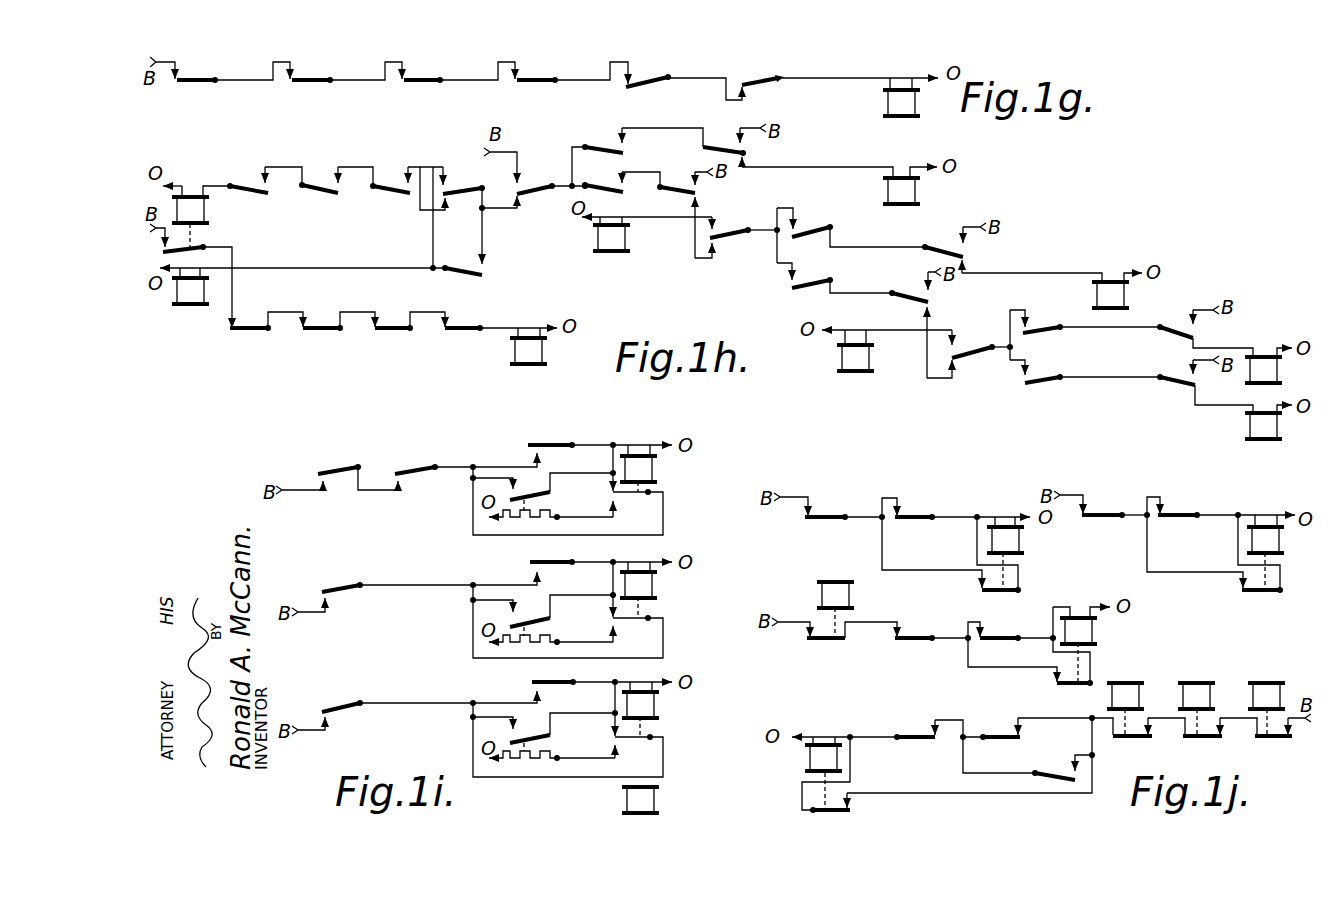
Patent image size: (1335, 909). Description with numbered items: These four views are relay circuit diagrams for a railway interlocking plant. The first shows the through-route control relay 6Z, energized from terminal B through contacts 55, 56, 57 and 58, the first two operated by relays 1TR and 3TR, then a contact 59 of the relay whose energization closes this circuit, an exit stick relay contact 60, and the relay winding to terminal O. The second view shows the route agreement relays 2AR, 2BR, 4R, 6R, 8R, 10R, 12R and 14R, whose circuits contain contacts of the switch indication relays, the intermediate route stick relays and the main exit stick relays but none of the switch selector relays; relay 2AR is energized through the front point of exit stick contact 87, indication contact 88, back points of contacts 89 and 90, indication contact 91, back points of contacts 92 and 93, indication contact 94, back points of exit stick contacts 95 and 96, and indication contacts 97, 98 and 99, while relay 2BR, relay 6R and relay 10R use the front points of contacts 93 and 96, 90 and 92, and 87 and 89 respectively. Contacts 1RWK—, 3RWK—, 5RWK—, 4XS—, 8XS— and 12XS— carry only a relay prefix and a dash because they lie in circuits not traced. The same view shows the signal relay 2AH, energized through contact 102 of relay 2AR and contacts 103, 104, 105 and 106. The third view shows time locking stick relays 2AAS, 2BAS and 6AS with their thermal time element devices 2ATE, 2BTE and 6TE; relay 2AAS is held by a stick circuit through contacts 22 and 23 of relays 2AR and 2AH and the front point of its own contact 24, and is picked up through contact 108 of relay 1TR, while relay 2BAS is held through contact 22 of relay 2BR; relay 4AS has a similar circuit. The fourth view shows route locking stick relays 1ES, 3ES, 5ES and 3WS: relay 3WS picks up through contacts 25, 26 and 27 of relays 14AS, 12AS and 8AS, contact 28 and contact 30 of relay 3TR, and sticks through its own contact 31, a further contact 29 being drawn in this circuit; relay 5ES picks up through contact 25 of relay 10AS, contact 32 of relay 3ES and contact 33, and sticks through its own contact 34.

In FIG. 1G, the relay 1TR contact 55 is at (207, 65).
In FIG. 1G, the relay 3TR contact 56 is at (320, 65).
In FIG. 1G, the relay 5TR contact 57 is at (428, 75).
In FIG. 1G, the relay 10TR contact 58 is at (545, 65).
In FIG. 1G, the relay 1NE contact 59 is at (652, 75).
In FIG. 1G, the relay 6XS contact 60 is at (764, 65).
In FIG. 1G, the through route control relay 6Z is at (884, 104).
In FIG. 1H, the relay 1NWK contact 99 is at (248, 172).
In FIG. 1H, the relay 3NWK contact 98 is at (318, 196).
In FIG. 1H, the relay 5NWK contact 97 is at (393, 172).
In FIG. 1H, the relay 6XS contact 96 is at (467, 190).
In FIG. 1H, the relay 2XS contact 95 is at (535, 200).
In FIG. 1H, the relay 1RWK is at (484, 271).
In FIG. 1H, the route agreement relay 2AR is at (204, 214).
In FIG. 1H, the route agreement relay 2BR is at (190, 304).
In FIG. 1H, the relay 2AR contact 102 is at (196, 252).
In FIG. 1H, the relay 1TR contact 103 is at (247, 338).
In FIG. 1H, the relay 3TR contact 104 is at (328, 320).
In FIG. 1H, the relay 5TR contact 105 is at (394, 338).
In FIG. 1H, the relay 10TR contact 106 is at (468, 320).
In FIG. 1H, the signal relay 2AH is at (528, 364).
In FIG. 1H, the contact of switch 4XS is at (725, 130).
In FIG. 1H, the route agreement relay 4R is at (916, 193).
In FIG. 1H, the relay 1NWK contact 94 is at (608, 172).
In FIG. 1H, the relay 6XS contact 93 is at (698, 187).
In FIG. 1H, the relay 6PBS contact 92 is at (732, 219).
In FIG. 1H, the route agreement relay 6R is at (612, 252).
In FIG. 1H, the back contact of relay 3RWK is at (808, 232).
In FIG. 1H, the contact of switch 8XS is at (942, 243).
In FIG. 1H, the route agreement relay 8R is at (1125, 298).
In FIG. 1H, the relay 3NWK contact 91 is at (809, 287).
In FIG. 1H, the relay 10XS contact 90 is at (905, 306).
In FIG. 1H, the relay 10PBS contact 89 is at (975, 370).
In FIG. 1H, the route agreement relay 10R is at (855, 372).
In FIG. 1H, the back contact of relay 5RWK is at (1039, 332).
In FIG. 1H, the contact of switch 12XS is at (1195, 335).
In FIG. 1H, the route agreement relay 12R is at (1252, 382).
In FIG. 1H, the relay 5NWK contact 88 is at (1042, 381).
In FIG. 1H, the relay 14XS contact 87 is at (1180, 388).
In FIG. 1H, the route agreement relay 14R is at (1250, 432).
In FIG. 1I, the route agreement relay contact 22 is at (335, 456).
In FIG. 1I, the relay 2AH contact 23 is at (415, 466).
In FIG. 1I, the relay 1TR contact 108 is at (555, 438).
In FIG. 1I, the time locking stick relay 2AAS is at (652, 470).
In FIG. 1I, the time element device 2ATE is at (543, 500).
In FIG. 1I, the time locking stick relay contact 24 is at (652, 490).
In FIG. 1I, the relay 1TR is at (528, 564).
In FIG. 1I, the time locking stick relay 2BAS is at (652, 587).
In FIG. 1I, the time element device 2BTE is at (543, 628).
In FIG. 1I, the relay 3TR is at (555, 671).
In FIG. 1I, the time locking stick relay 6AS is at (655, 706).
In FIG. 1I, the time element device 6TE is at (546, 745).
In FIG. 1I, the time locking stick relay 4AS is at (656, 800).
In FIG. 1J, the route locking relay contact 32 is at (830, 495).
In FIG. 1J, the relay 5TR contact 33 is at (916, 515).
In FIG. 1J, the route locking stick relay 1ES is at (1015, 542).
In FIG. 1J, the relay 5ES contact 34 is at (1010, 585).
In FIG. 1J, the time locking stick relay 10AS is at (832, 579).
In FIG. 1J, the route locking stick relay 3ES is at (1266, 525).
In FIG. 1J, the time locking stick relay contact 25 is at (826, 650).
In FIG. 1J, the route locking stick relay 5ES is at (1097, 633).
In FIG. 1J, the relay 3TR contact 30 is at (912, 720).
In FIG. 1J, the relay 5TR contact 28 is at (997, 720).
In FIG. 1J, the relay 8AS contact 27 is at (1137, 740).
In FIG. 1J, the relay 12AS contact 26 is at (1207, 740).
In FIG. 1J, the time locking stick relay 8AS is at (1120, 683).
In FIG. 1J, the time locking stick relay 12AS is at (1195, 675).
In FIG. 1J, the time locking stick relay 14AS is at (1265, 675).
In FIG. 1J, the route locking stick relay 3WS is at (806, 766).
In FIG. 1J, the relay 3WS contact 31 is at (848, 814).
In FIG. 1J, the contact 3RWP- 29 is at (1058, 769).